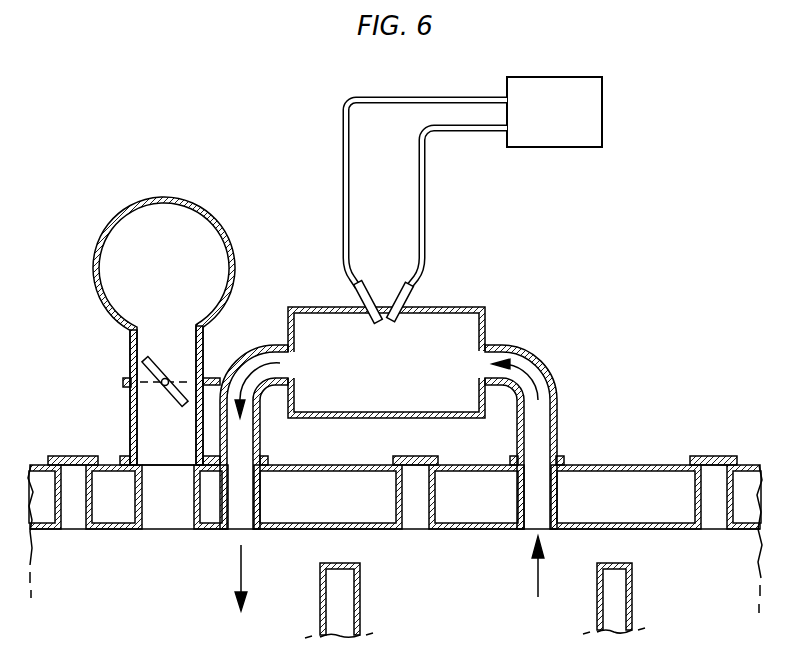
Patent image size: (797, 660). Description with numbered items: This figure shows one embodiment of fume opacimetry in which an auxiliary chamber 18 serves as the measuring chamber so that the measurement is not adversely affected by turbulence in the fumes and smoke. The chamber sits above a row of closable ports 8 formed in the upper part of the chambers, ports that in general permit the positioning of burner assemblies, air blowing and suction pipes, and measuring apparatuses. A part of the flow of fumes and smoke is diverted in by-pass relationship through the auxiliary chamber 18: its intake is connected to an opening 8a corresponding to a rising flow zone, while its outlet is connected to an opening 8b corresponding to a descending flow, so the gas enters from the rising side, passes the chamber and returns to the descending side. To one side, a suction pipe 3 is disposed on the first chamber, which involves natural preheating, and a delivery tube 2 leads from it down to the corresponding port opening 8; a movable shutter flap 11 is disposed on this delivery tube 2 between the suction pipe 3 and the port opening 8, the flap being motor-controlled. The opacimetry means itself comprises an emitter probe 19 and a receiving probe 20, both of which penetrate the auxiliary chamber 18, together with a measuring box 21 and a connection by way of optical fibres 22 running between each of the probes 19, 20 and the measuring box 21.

The delivery tube 2 is at (130, 420).
The suction pipe 3 is at (125, 208).
The closable port 8 is at (67, 457).
The opening corresponding to a rising flow zone 8a is at (540, 457).
The opening corresponding to a descending flow 8b is at (421, 457).
The movable shutter flap 11 is at (143, 370).
The auxiliary chamber 18 is at (487, 313).
The emitter probe 19 is at (414, 296).
The receiving probe 20 is at (355, 296).
The measuring box 21 is at (590, 99).
The optical fibres 22 is at (358, 97).